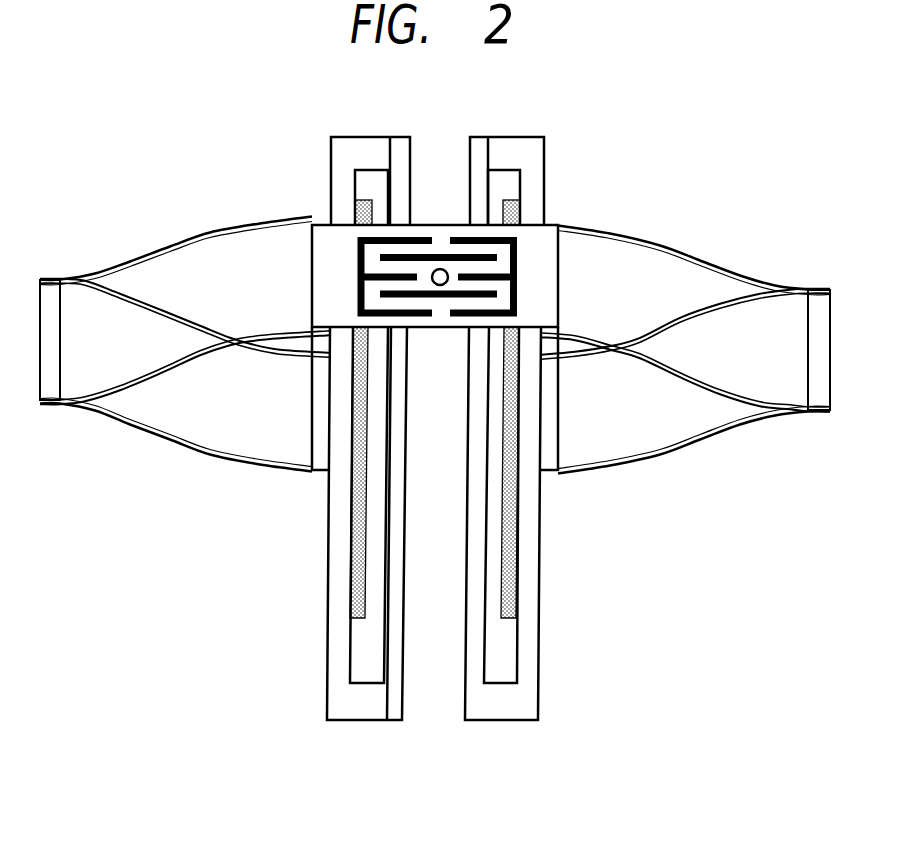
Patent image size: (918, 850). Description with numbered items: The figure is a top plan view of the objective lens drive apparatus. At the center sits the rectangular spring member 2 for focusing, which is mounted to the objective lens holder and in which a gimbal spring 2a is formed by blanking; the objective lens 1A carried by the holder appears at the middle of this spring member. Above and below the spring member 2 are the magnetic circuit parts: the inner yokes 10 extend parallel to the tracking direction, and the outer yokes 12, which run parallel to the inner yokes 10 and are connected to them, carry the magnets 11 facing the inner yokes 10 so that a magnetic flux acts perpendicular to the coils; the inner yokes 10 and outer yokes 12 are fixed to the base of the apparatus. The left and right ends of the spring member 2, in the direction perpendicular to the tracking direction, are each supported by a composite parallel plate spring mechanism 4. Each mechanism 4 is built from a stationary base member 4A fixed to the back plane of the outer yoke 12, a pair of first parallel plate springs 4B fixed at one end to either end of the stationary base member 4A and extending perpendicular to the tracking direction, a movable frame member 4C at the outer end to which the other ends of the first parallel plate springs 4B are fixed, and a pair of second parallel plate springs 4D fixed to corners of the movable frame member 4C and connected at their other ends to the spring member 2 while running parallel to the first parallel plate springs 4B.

The spring member 2 is at (547, 290).
The gimbal spring 2a is at (438, 315).
The objective lens 1A is at (440, 268).
The inner yoke 10 is at (475, 147).
The magnet 11 is at (355, 588).
The outer yoke 12 is at (528, 157).
The composite parallel plate spring mechanism 4 is at (161, 452).
The stationary base member 4A is at (315, 427).
The first parallel plate spring 4B is at (215, 330).
The movable frame member 4C is at (50, 390).
The second parallel plate spring 4D is at (218, 232).